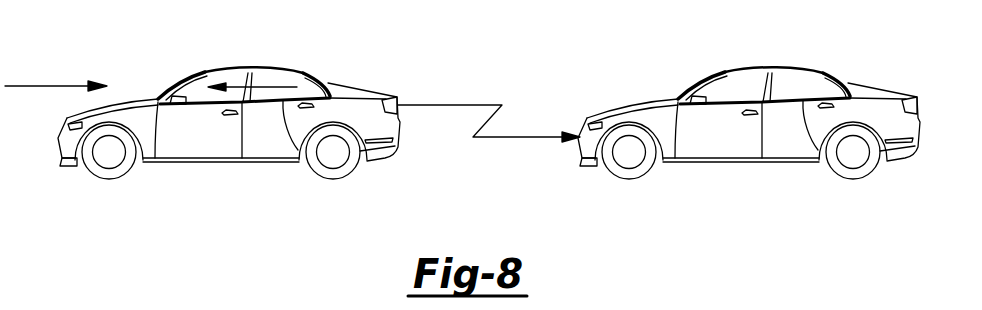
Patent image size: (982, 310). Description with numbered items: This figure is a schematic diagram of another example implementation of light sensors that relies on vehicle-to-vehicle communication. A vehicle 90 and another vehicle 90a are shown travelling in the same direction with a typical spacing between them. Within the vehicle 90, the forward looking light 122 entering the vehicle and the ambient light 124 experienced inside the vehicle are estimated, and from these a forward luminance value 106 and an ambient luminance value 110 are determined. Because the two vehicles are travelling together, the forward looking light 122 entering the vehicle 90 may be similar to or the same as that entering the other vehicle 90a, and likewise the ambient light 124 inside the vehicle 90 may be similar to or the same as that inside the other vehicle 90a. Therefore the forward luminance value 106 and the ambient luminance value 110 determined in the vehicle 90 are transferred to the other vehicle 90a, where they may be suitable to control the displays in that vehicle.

The vehicle 90 is at (210, 78).
The other vehicle 90a is at (792, 68).
The forward luminance value 106 is at (489, 82).
The ambient luminance value 110 is at (472, 103).
The forward looking light 122 is at (57, 85).
The ambient light 124 is at (280, 67).